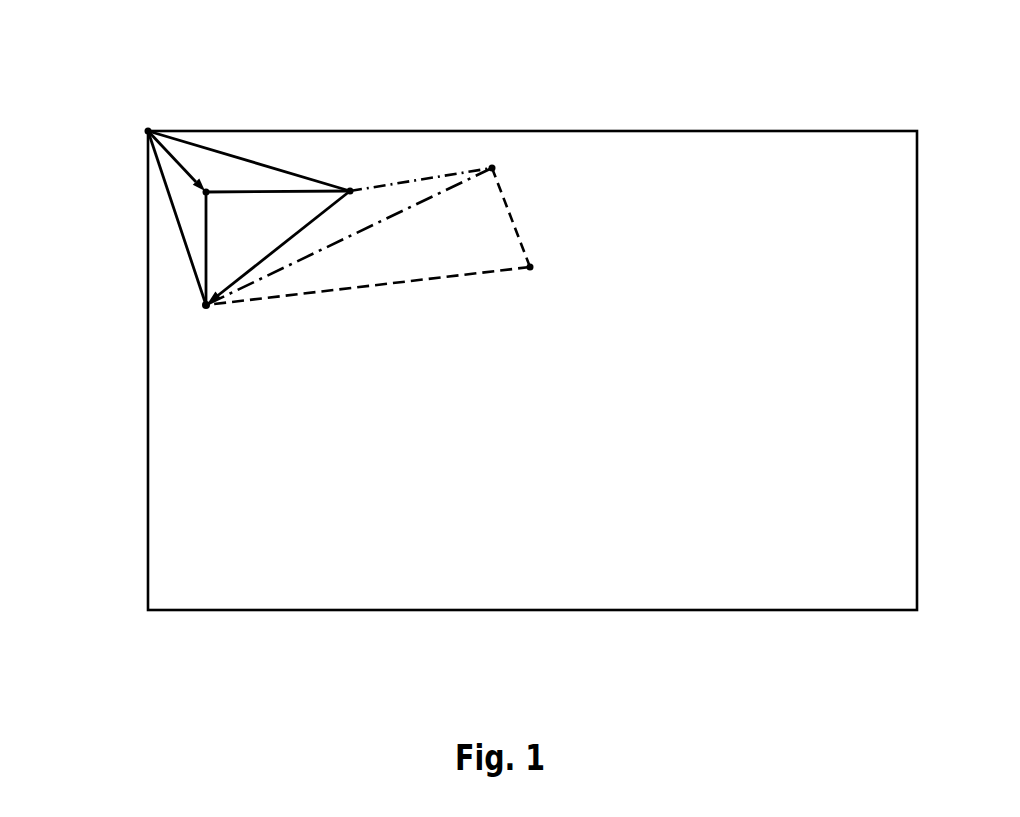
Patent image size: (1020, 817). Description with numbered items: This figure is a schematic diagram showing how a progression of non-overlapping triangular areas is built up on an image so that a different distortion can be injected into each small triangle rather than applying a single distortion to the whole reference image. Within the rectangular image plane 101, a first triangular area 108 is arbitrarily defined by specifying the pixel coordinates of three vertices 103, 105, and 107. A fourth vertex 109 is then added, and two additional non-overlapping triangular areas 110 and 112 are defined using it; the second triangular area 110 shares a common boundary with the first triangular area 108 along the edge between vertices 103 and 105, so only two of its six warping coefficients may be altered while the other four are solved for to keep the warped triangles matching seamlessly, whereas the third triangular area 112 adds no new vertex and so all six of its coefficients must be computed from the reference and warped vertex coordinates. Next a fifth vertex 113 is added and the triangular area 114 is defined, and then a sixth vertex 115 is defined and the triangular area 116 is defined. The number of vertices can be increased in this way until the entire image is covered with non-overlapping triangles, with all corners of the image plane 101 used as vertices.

The image plane 101 is at (332, 615).
The first vertex 103 is at (214, 179).
The second vertex 105 is at (360, 181).
The third vertex 107 is at (318, 212).
The first triangular area 108 is at (250, 223).
The fourth vertex 109 is at (136, 128).
The second triangular area 110 is at (205, 160).
The third triangular area 112 is at (190, 205).
The fifth vertex 113 is at (502, 158).
The fourth triangular area 114 is at (388, 200).
The sixth vertex 115 is at (542, 258).
The fifth triangular area 116 is at (455, 232).